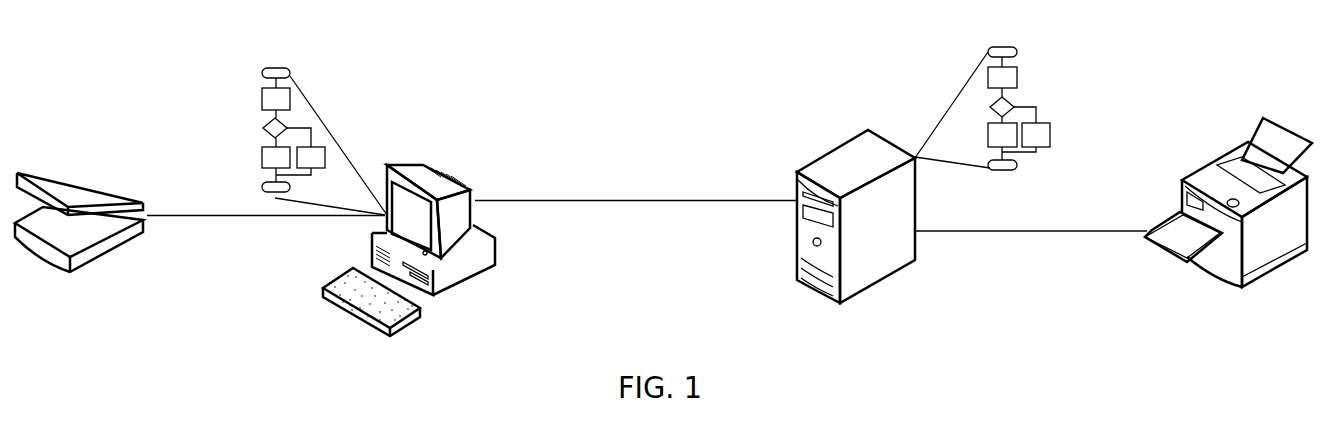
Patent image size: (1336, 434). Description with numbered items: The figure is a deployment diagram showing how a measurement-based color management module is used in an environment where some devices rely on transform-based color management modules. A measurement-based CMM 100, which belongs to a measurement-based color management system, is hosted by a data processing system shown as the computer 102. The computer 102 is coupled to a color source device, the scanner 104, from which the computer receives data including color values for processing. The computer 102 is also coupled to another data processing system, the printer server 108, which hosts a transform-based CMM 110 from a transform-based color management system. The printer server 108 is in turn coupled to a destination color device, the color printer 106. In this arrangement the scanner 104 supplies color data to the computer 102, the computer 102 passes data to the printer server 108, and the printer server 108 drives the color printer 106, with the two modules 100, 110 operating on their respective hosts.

The measurement-based CMM 100 is at (290, 74).
The computer 102 is at (463, 187).
The scanner 104 is at (93, 173).
The color printer 106 is at (1182, 180).
The printer server 108 is at (832, 148).
The transform-based CMM 110 is at (1017, 53).